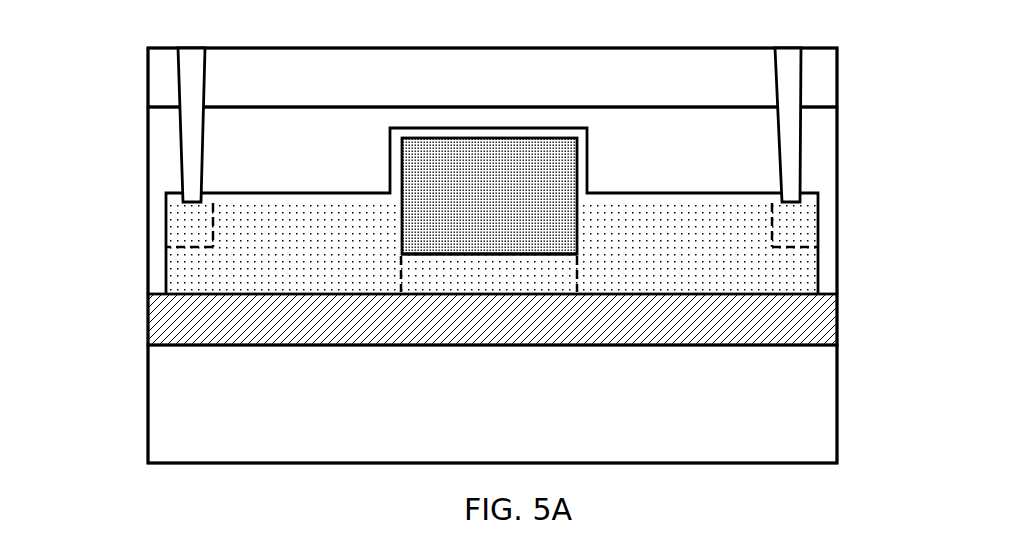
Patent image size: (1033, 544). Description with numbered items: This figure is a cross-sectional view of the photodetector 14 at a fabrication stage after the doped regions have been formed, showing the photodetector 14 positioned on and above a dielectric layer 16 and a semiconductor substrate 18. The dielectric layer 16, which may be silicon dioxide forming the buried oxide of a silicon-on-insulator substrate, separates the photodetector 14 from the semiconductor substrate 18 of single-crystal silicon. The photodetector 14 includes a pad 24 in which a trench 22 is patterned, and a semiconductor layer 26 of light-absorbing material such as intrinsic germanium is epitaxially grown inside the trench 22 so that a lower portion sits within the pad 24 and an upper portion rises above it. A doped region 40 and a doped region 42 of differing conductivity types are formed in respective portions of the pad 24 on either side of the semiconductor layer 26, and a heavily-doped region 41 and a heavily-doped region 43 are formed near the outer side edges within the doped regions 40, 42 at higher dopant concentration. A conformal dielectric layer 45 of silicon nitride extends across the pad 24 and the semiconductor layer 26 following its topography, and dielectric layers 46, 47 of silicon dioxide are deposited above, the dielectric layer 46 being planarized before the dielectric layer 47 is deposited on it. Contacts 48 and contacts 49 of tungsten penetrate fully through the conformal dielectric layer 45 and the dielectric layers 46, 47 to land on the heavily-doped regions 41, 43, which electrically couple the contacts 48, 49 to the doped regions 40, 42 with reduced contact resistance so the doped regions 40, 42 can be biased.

The photodetector 14 is at (140, 160).
The dielectric layer 16 is at (787, 326).
The semiconductor substrate 18 is at (783, 395).
The trench 22 is at (500, 255).
The pad 24 is at (462, 273).
The semiconductor layer 26 is at (540, 175).
The doped region 40 is at (212, 277).
The heavily-doped region 41 is at (182, 213).
The doped region 42 is at (753, 282).
The heavily-doped region 43 is at (802, 212).
The conformal dielectric layer 45 is at (257, 197).
The dielectric layer 46 is at (738, 163).
The dielectric layer 47 is at (728, 75).
The contacts 48 is at (192, 78).
The contacts 49 is at (788, 129).